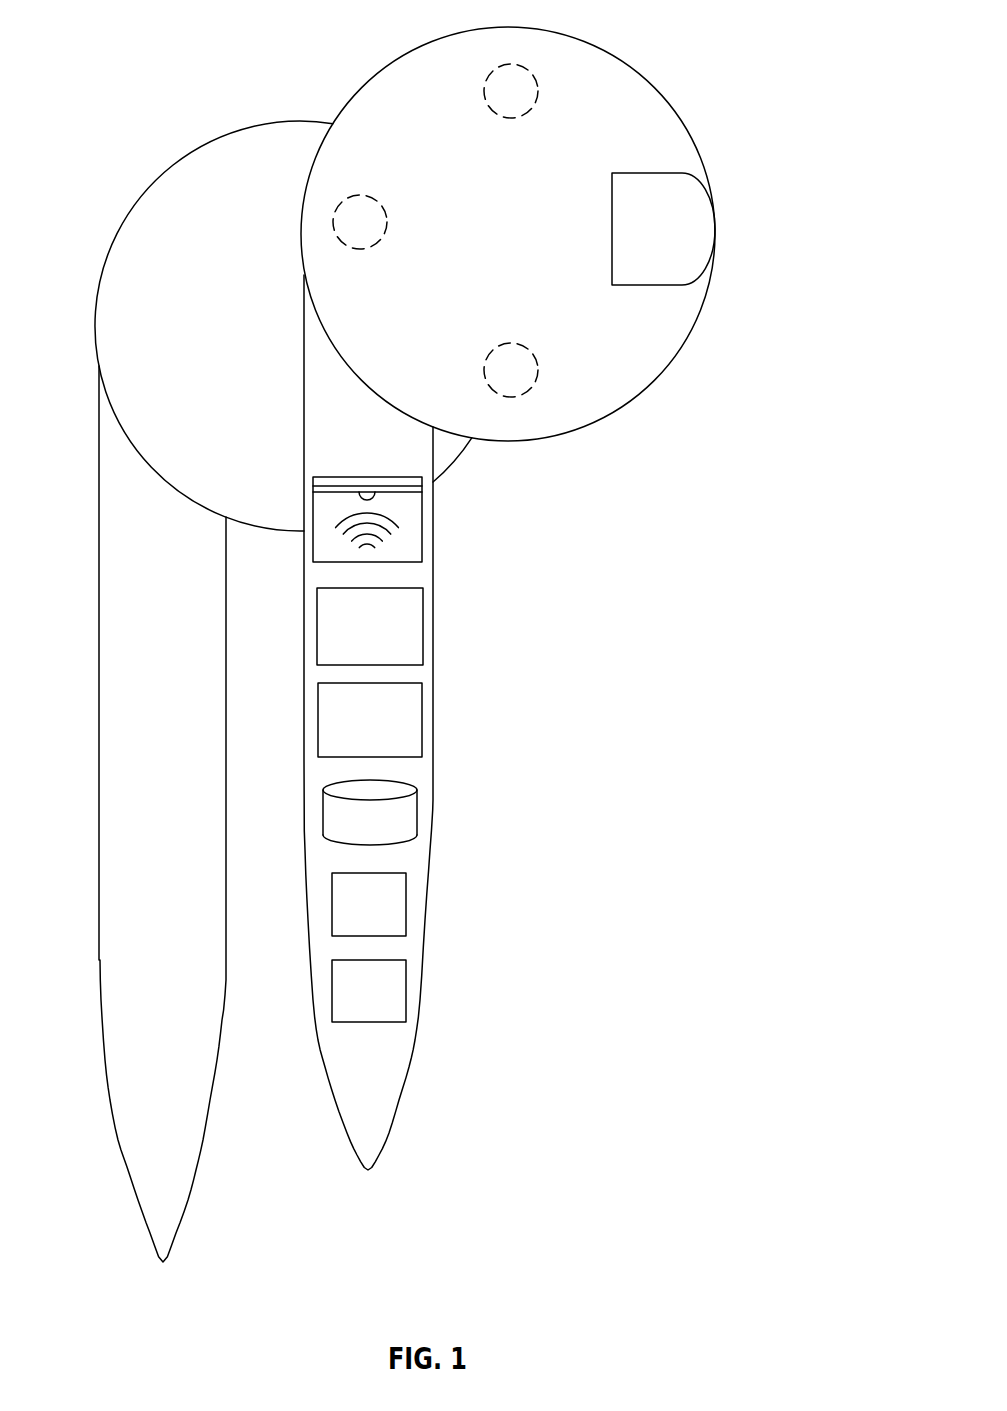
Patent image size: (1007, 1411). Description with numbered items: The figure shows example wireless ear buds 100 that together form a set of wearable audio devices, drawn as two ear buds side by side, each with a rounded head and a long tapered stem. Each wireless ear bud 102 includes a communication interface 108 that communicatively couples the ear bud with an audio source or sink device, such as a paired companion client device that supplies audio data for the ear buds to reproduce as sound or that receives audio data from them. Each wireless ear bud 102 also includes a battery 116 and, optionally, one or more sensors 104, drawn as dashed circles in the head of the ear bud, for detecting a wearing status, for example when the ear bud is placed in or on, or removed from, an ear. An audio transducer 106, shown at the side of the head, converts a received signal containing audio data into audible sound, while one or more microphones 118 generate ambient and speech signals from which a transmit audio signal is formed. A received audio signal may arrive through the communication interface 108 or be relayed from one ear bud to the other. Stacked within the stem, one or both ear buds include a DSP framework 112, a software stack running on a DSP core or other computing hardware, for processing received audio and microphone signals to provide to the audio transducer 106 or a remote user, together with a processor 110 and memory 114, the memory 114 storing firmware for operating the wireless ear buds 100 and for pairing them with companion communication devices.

The wireless ear buds 100 is at (713, 74).
The wireless ear bud 102 is at (175, 163).
The sensors 104 is at (509, 116).
The audio transducer 106 is at (715, 230).
The communication interface 108 is at (422, 520).
The processor 110 is at (423, 627).
The DSP framework 112 is at (422, 722).
The memory 114 is at (417, 813).
The battery 116 is at (406, 905).
The microphones 118 is at (406, 992).